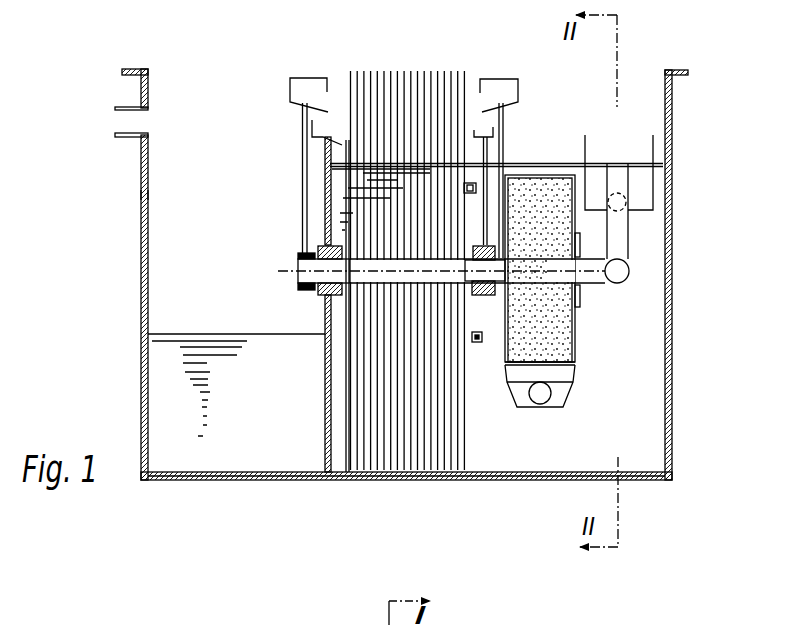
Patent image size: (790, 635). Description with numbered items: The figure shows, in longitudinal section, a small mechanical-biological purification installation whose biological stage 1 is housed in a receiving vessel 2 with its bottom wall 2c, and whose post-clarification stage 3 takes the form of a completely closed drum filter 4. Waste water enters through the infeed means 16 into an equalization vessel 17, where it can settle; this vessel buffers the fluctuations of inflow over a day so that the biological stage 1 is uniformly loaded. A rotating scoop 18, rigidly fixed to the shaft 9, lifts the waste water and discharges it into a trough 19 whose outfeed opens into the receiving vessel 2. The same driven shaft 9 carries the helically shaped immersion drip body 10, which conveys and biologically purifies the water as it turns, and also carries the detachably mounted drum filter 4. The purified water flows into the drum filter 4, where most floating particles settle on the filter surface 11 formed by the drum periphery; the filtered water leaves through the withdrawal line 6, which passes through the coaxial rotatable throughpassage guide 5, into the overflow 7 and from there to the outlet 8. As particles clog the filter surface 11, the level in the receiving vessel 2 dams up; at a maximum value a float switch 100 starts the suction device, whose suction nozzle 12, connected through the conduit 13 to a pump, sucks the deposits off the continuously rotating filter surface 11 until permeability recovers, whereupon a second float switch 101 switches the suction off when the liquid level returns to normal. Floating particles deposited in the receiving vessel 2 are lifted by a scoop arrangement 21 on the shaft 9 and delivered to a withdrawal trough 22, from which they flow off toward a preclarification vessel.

The biological stage 1 is at (514, 425).
The receiving vessel 2 is at (538, 453).
The tank bottom 2c is at (488, 418).
The post-clarification stage 3 is at (592, 315).
The drum filter 4 is at (575, 336).
The throughpassage guide 5 is at (581, 296).
The withdrawal line 6 is at (622, 240).
The overflow 7 is at (618, 170).
The outlet 8 is at (627, 202).
The shaft 9 is at (298, 274).
The immersion drip body 10 is at (408, 75).
The filter surface 11 is at (576, 366).
The suction nozzle 12 is at (520, 372).
The conduit 13 is at (540, 400).
The infeed means 16 is at (120, 120).
The equalization vessel 17 is at (157, 197).
The rotating scoop 18 is at (305, 78).
The trough 19 is at (322, 137).
The scoop arrangement 21 is at (505, 79).
The withdrawal trough 22 is at (474, 130).
The float switch 100 is at (470, 193).
The second float switch 101 is at (482, 337).